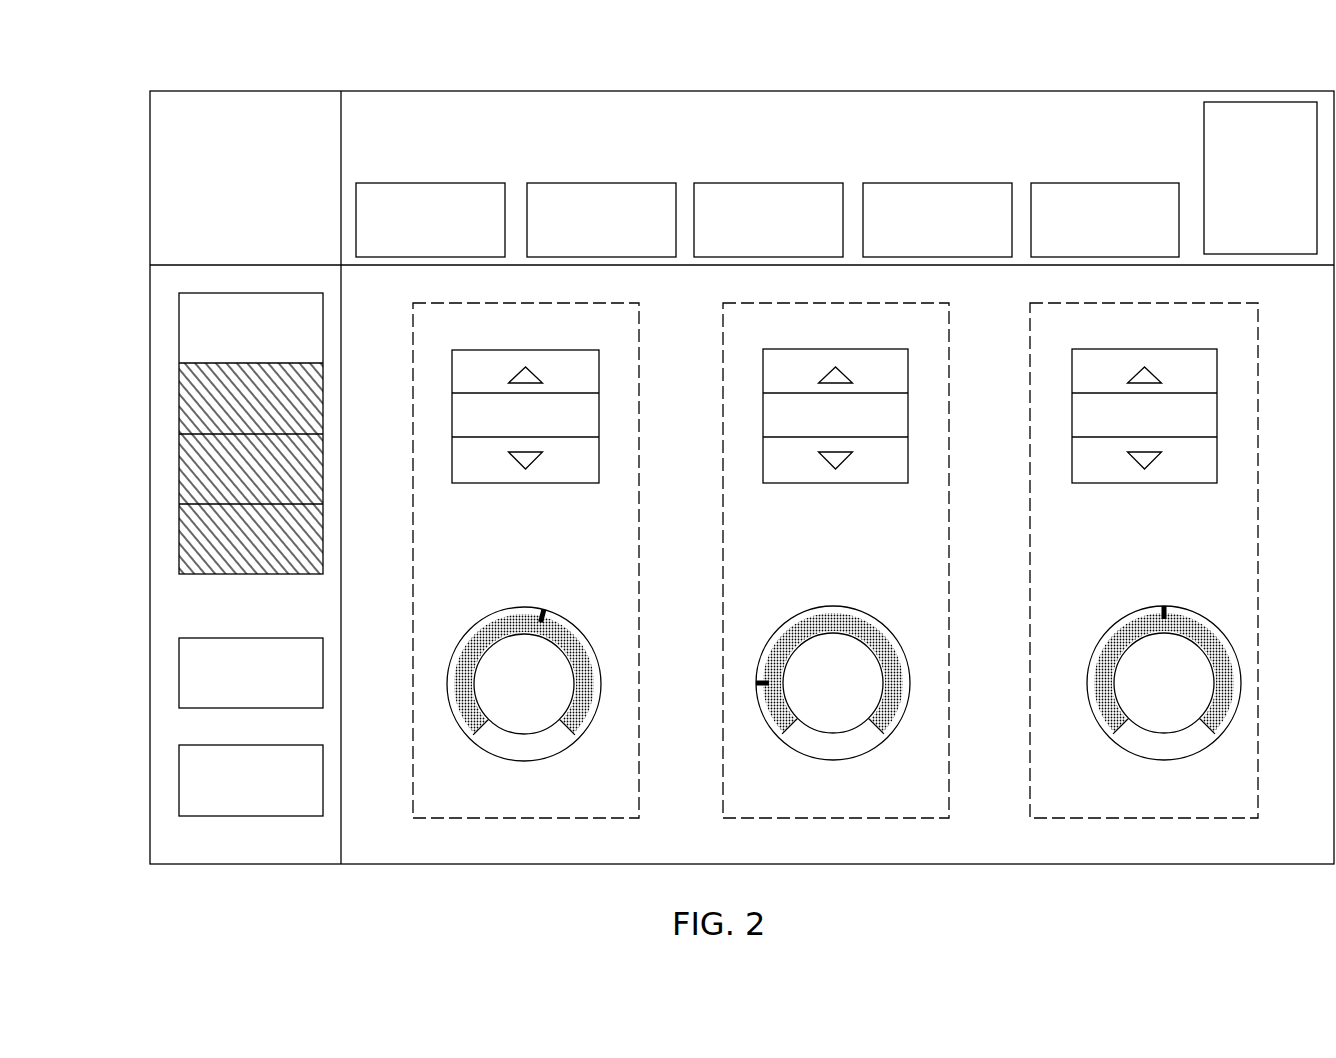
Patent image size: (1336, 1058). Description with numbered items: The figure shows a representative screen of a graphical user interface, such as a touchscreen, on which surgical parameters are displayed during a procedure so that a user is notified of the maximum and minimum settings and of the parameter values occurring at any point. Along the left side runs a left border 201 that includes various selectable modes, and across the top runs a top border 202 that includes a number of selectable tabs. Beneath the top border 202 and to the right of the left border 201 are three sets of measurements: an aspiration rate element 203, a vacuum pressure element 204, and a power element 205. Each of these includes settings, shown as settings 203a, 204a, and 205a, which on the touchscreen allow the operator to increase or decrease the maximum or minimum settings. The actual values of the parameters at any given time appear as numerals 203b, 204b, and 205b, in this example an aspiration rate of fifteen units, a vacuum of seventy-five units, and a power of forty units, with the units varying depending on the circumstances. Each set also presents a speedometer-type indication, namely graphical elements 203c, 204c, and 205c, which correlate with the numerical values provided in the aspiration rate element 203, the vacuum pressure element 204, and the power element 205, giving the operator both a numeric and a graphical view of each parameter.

The left border 201 is at (189, 598).
The top border 202 is at (693, 106).
The aspiration rate element 203 is at (495, 560).
The aspiration rate settings 203a is at (525, 430).
The aspiration rate numeral 203b is at (463, 689).
The aspiration rate graphical element 203c is at (524, 658).
The vacuum pressure element 204 is at (805, 560).
The vacuum pressure settings 204a is at (835, 431).
The vacuum pressure numeral 204b is at (772, 691).
The vacuum pressure graphical element 204c is at (823, 660).
The power element 205 is at (1117, 560).
The power settings 205a is at (1144, 429).
The power numeral 205b is at (1095, 684).
The power graphical element 205c is at (1143, 658).